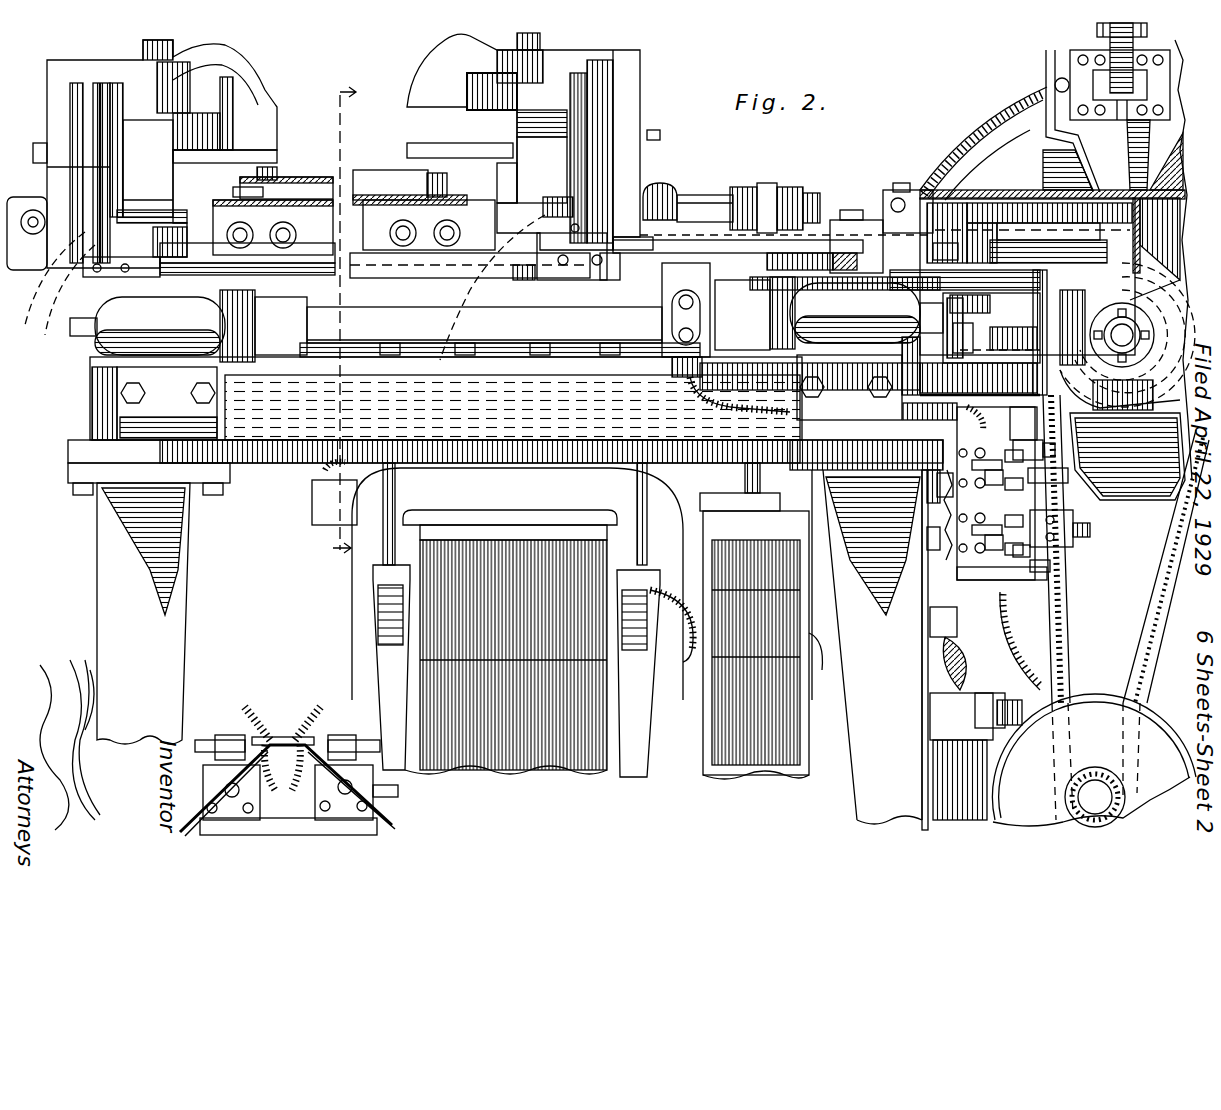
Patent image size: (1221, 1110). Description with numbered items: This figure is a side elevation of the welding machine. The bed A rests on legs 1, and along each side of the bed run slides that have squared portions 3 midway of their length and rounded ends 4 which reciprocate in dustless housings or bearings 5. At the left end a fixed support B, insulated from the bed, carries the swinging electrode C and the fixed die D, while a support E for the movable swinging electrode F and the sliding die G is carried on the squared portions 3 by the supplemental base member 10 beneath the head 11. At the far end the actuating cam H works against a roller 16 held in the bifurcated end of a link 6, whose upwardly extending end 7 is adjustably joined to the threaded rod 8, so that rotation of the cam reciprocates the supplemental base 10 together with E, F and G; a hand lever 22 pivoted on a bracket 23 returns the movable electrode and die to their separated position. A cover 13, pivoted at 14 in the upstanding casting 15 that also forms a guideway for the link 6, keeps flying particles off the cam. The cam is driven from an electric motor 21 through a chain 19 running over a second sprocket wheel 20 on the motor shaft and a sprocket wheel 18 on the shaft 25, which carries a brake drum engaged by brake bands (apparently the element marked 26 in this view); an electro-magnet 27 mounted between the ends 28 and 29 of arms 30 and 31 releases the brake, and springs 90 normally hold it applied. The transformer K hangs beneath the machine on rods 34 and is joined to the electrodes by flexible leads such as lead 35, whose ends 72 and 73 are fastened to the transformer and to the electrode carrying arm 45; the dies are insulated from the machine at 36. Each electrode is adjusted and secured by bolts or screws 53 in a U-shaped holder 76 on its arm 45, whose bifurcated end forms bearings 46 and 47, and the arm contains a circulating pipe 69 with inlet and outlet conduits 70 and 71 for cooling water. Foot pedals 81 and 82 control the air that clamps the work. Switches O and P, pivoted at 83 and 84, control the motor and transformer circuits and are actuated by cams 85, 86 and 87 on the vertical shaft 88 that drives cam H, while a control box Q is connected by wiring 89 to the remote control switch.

The legs 1 is at (509, 647).
The squared portions of slides 3 is at (484, 316).
The rounded ends of slides 4 is at (507, 319).
The dustless housings or bearings 5 is at (506, 319).
The link 6 is at (940, 195).
The upwardly extending end of link 7 is at (770, 190).
The rod 8 is at (668, 195).
The supplemental base member 10 is at (605, 270).
The head 11 is at (100, 66).
The cover 13 is at (967, 192).
The pivot of cover 14 is at (899, 200).
The upstanding casting 15 is at (873, 243).
The roller 16 is at (935, 252).
The sprocket wheel 18 is at (1133, 217).
The chain 19 is at (1152, 633).
The second sprocket wheel 20 is at (1066, 792).
The electric motor 21 is at (1094, 760).
The hand lever 22 is at (842, 272).
The bracket 23 is at (713, 243).
The shaft 25 is at (1043, 330).
The cam disk 26 is at (1085, 430).
The electro-magnet 27 is at (1118, 42).
The arm end 28 is at (1046, 62).
The arm end 29 is at (1182, 60).
The arm 30 is at (1030, 153).
The arm 31 is at (1170, 157).
The rods 34 is at (350, 522).
The flexible lead 35 is at (322, 470).
The die insulation 36 is at (280, 190).
The electrode carrying arm 45 is at (345, 155).
The bearing 46 is at (515, 92).
The bearing 47 is at (512, 212).
The bolt or screw 53 is at (265, 155).
The circulating pipe 69 is at (578, 212).
The conduit 70 is at (472, 318).
The second conduit 71 is at (612, 306).
The lead end 72 is at (592, 355).
The lead end 73 is at (315, 505).
The electrode holder 76 is at (272, 168).
The foot pedal 81 is at (385, 818).
The foot pedal 82 is at (178, 825).
The switch pivot 83 is at (1001, 502).
The switch pivot 84 is at (1035, 574).
The cam 85 is at (1058, 452).
The cam 86 is at (1090, 528).
The cam 87 is at (1085, 550).
The vertical shaft 88 is at (1070, 478).
The wiring 89 is at (738, 404).
The springs 90 is at (1040, 395).
The bed A is at (505, 416).
The fixed support B is at (148, 168).
The swinging electrode C is at (293, 178).
The fixed die D is at (235, 207).
The support for movable electrode E is at (555, 135).
The movable swinging electrode F is at (372, 172).
The sliding die G is at (429, 225).
The actuating cam H is at (1015, 240).
The transformer K is at (443, 679).
The switch O is at (982, 489).
The switch P is at (1002, 565).
The control box Q is at (688, 310).